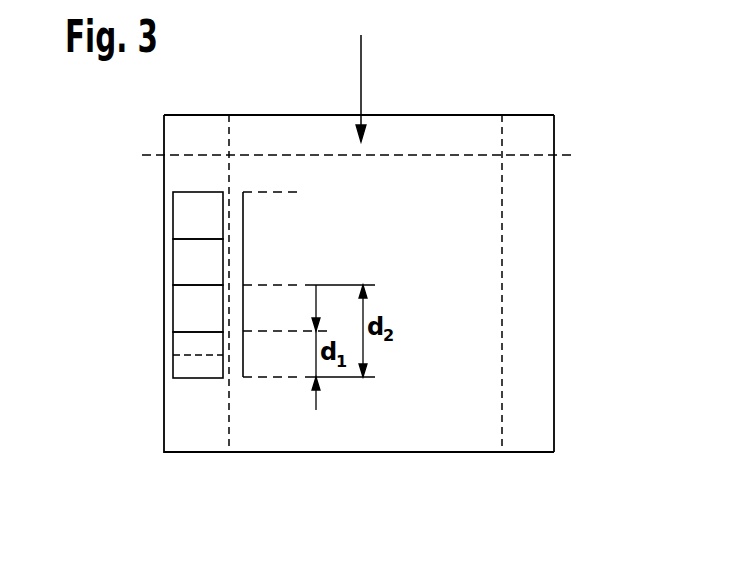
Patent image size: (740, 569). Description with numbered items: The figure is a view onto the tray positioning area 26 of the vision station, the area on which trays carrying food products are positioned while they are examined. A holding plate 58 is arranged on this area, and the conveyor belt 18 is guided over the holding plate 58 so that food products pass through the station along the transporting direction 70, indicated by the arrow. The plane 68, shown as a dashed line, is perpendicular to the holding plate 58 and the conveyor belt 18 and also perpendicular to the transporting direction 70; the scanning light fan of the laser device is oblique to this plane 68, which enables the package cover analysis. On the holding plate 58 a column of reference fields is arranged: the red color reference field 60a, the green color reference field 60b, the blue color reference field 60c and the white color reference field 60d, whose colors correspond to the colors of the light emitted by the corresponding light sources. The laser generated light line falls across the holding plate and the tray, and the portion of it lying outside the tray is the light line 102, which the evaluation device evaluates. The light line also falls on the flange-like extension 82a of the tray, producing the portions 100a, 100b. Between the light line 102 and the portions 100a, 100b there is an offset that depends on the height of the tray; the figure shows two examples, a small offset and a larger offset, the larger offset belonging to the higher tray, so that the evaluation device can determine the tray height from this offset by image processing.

The conveyor belt 18 is at (379, 433).
The tray positioning area 26 is at (478, 215).
The holding plate 58 is at (196, 435).
The plane 68 is at (530, 152).
The transporting direction 70 is at (362, 62).
The reference field 60a is at (185, 228).
The reference field 60b is at (185, 276).
The reference field 60c is at (185, 311).
The reference field 60d is at (185, 344).
The light line 102 is at (187, 357).
The flange-like extension 82a is at (253, 367).
The portion of the light line 100a is at (277, 333).
The portion of the light line 100b is at (274, 283).